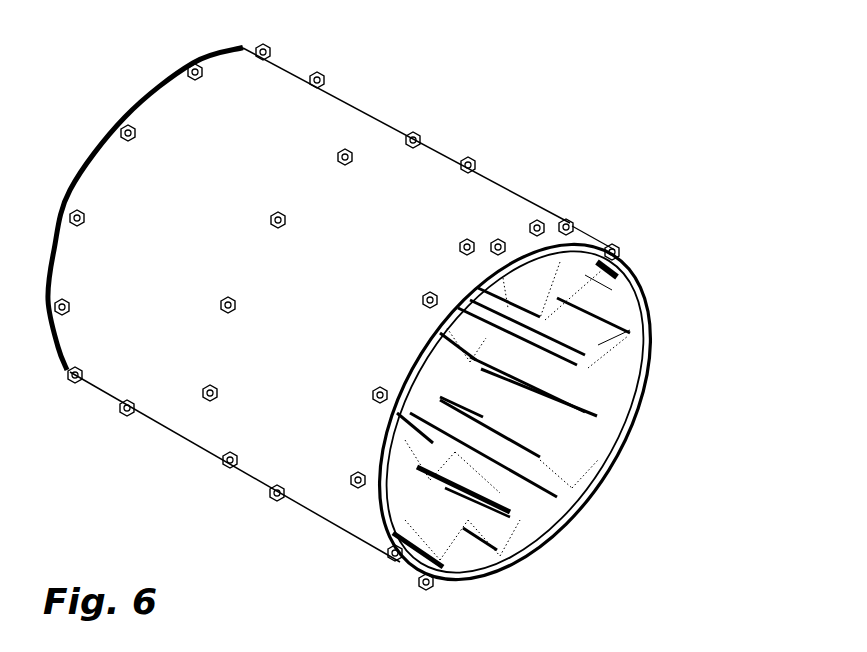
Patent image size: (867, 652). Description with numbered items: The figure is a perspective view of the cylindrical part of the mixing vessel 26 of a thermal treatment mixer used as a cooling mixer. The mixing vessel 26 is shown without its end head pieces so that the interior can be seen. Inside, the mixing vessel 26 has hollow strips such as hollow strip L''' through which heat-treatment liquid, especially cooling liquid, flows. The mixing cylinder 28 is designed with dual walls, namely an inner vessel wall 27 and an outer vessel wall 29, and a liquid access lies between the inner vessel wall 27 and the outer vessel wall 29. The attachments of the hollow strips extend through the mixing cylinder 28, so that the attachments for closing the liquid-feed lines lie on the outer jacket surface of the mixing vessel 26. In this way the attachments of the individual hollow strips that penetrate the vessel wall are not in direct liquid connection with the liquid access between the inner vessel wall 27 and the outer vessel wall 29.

The mixing vessel 26 is at (494, 132).
The inner vessel wall 27 is at (591, 441).
The mixing cylinder 28 is at (162, 394).
The outer vessel wall 29 is at (537, 555).
The hollow strip L''' is at (673, 323).